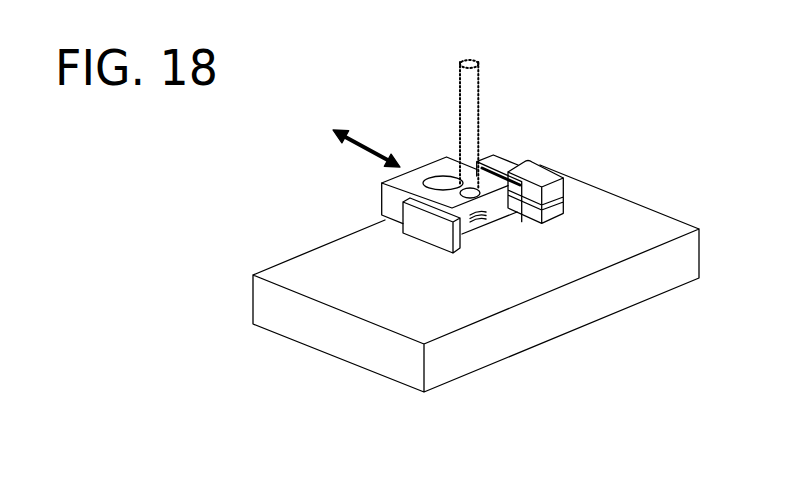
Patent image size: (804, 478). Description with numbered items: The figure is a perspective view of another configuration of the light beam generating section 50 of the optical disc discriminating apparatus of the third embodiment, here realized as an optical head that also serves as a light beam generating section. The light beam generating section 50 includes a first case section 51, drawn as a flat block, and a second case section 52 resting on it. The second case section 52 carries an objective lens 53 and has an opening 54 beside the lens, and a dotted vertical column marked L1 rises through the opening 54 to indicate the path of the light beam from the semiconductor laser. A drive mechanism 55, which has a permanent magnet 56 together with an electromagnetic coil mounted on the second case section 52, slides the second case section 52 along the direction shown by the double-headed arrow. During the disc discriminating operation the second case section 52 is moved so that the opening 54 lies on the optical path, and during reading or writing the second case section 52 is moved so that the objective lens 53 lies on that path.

The light beam generating section 50 is at (226, 277).
The first case section 51 is at (275, 315).
The second case section 52 is at (401, 193).
The objective lens 53 is at (447, 181).
The opening 54 is at (475, 190).
The drive mechanism 55 is at (548, 178).
The permanent magnet 56 is at (512, 163).
The optical axis L1 is at (473, 98).